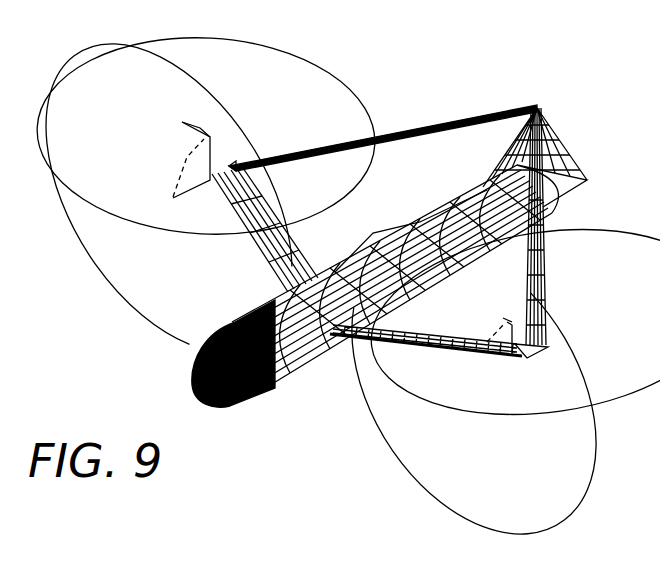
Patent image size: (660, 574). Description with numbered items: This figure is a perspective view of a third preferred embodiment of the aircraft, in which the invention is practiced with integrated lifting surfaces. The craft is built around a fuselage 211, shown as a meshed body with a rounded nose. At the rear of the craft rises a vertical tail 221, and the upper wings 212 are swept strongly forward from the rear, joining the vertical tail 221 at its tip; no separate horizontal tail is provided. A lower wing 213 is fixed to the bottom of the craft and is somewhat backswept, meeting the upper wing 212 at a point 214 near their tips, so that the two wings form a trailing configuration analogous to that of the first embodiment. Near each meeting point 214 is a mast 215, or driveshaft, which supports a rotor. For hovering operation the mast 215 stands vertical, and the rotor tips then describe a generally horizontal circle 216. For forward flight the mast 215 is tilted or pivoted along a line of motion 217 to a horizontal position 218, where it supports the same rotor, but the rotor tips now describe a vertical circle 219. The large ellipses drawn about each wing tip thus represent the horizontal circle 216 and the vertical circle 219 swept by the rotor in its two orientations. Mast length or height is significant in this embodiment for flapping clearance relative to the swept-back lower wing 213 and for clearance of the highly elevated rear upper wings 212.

The fuselage 211 is at (304, 368).
The upper wing 212 is at (477, 116).
The lower wing 213 is at (268, 277).
The meeting point 214 is at (229, 164).
The mast 215 is at (182, 122).
The horizontal circle 216 is at (356, 84).
The line of motion 217 is at (181, 160).
The horizontal position 218 is at (171, 197).
The vertical circle 219 is at (148, 322).
The vertical tail 221 is at (557, 138).